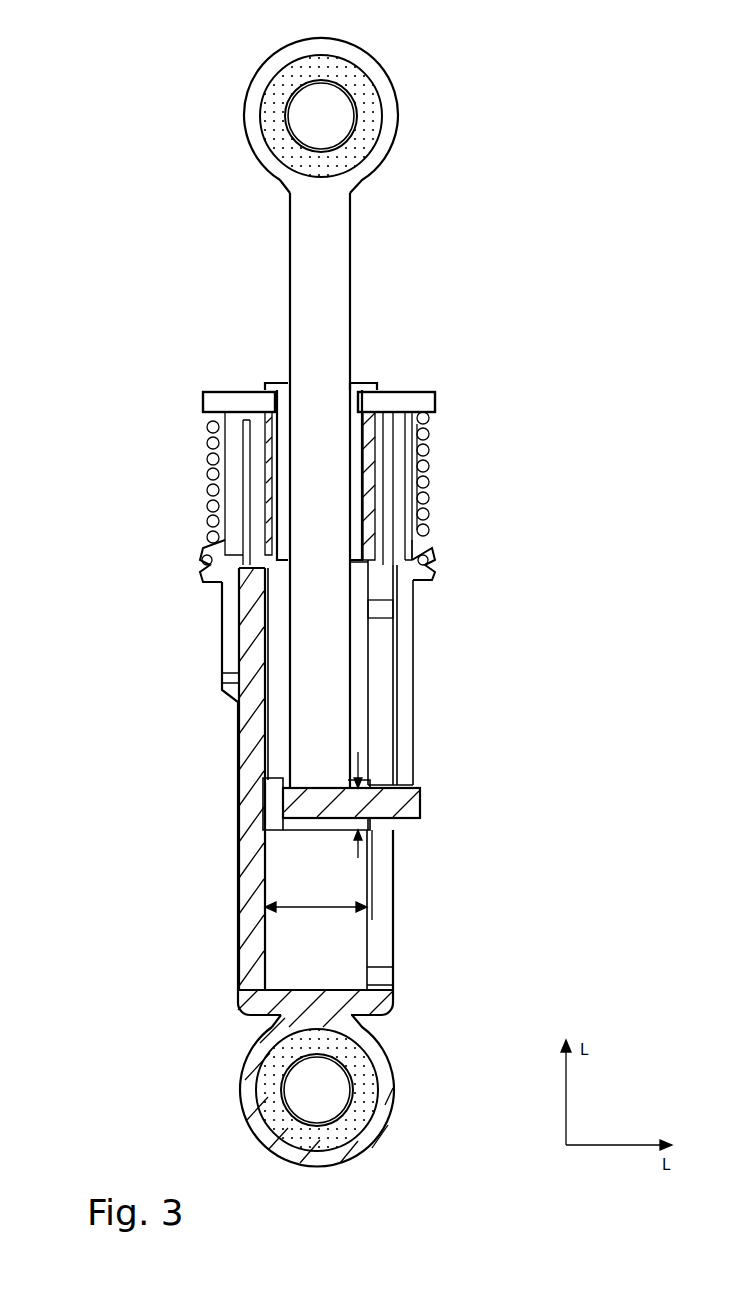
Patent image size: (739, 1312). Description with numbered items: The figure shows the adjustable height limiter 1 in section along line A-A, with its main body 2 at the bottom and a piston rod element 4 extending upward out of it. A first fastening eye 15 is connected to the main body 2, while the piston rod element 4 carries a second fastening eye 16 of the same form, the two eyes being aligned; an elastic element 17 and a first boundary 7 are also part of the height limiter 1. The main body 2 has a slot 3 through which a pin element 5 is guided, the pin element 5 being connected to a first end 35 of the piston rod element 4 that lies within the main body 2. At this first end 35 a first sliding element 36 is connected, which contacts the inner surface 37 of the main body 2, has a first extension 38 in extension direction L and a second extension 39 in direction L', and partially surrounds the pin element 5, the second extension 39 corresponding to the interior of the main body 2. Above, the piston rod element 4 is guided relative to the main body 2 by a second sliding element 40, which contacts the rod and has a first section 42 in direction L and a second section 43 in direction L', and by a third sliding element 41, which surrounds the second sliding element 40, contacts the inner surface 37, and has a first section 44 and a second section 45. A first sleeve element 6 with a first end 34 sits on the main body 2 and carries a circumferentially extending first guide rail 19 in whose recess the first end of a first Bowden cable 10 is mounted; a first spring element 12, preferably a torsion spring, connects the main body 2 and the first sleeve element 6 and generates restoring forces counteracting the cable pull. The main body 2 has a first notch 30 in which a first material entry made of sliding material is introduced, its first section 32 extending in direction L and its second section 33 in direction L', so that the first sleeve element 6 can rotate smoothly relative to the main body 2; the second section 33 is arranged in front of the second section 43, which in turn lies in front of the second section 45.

The height limiter 1 is at (98, 71).
The main body 2 is at (250, 845).
The slot 3 is at (385, 873).
The piston rod element 4 is at (335, 209).
The pin element 5 is at (421, 805).
The first sleeve element 6 is at (410, 630).
The first boundary 7 is at (222, 686).
The first Bowden cable 10 is at (424, 575).
The first spring element 12 is at (230, 537).
The first fastening eye 15 is at (386, 1118).
The second fastening eye 16 is at (385, 106).
The elastic element 17 is at (352, 56).
The first guide rail 19 is at (400, 590).
The first notch 30 is at (417, 495).
The first section of the first material entry 32 is at (410, 537).
The second section of the first material entry 33 is at (394, 406).
The first end of the first sleeve element 34 is at (455, 403).
The first end of the piston rod element 35 is at (455, 773).
The first sliding element 36 is at (270, 800).
The inner surface 37 is at (266, 877).
The first extension 38 is at (378, 818).
The second extension 39 is at (318, 910).
The second sliding element 40 is at (270, 470).
The third sliding element 41 is at (250, 400).
The first section of the second sliding element 42 is at (260, 505).
The second section of the second sliding element 43 is at (212, 392).
The first section of the third sliding element 44 is at (208, 441).
The second section of the third sliding element 45 is at (280, 383).